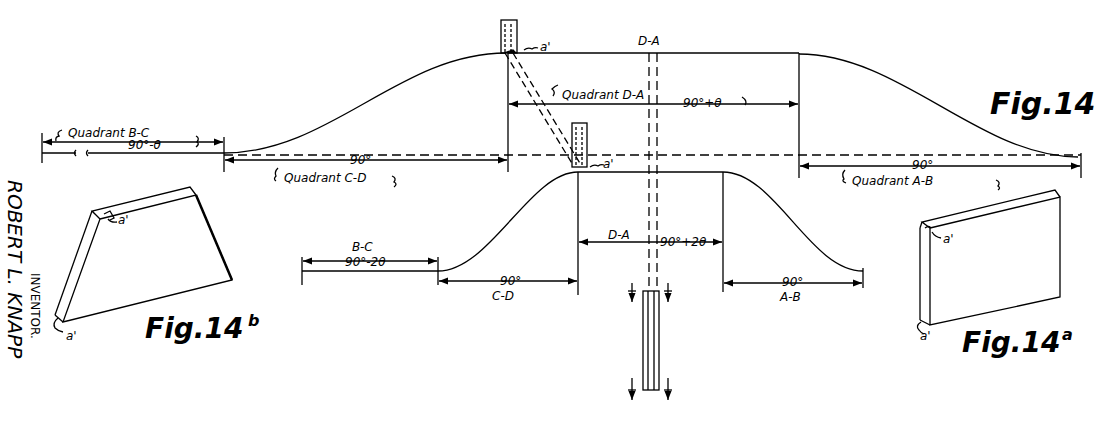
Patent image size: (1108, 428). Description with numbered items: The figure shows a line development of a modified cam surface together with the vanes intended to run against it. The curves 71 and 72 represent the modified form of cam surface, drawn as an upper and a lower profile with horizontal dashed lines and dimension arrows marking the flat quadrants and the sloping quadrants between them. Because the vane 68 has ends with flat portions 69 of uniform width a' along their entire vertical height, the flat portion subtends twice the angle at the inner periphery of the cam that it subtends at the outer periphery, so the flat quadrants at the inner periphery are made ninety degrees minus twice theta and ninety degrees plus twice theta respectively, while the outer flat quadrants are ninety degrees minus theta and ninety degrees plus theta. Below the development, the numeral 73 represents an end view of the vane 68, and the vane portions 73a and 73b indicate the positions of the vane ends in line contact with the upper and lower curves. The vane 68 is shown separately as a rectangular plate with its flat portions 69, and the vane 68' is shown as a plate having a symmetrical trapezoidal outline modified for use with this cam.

In FIG. 14, the cam surface curve 71 is at (926, 97).
In FIG. 14, the cam surface curve 72 is at (800, 227).
In FIG. 14, the end view of the vane 73 is at (661, 336).
In FIG. 14, the vane portion 73a is at (520, 34).
In FIG. 14, the vane portion 73b is at (589, 141).
In FIG. 14a, the vane 68 is at (991, 257).
In FIG. 14b, the vane 68' is at (147, 254).
In FIG. 14a, the flat portion 69 is at (924, 268).
In FIG. 14b, the flat portion 69 is at (81, 250).